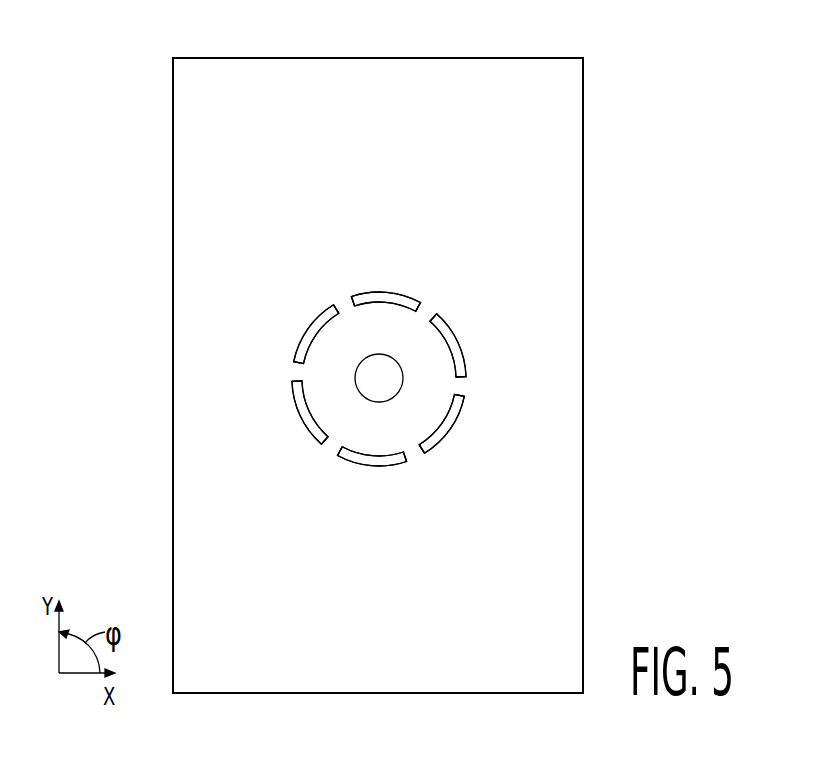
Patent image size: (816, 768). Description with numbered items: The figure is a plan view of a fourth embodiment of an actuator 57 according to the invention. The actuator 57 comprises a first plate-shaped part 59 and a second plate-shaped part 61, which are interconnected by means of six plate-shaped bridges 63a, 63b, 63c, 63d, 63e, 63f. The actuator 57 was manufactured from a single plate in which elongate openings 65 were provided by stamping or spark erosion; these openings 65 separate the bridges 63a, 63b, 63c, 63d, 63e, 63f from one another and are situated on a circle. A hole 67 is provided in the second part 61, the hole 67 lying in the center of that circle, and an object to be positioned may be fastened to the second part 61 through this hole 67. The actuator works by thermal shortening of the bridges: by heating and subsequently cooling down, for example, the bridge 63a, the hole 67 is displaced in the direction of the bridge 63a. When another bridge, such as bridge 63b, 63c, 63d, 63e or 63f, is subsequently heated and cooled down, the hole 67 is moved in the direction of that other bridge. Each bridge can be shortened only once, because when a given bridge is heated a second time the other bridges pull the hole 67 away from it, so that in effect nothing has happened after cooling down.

The actuator 57 is at (181, 38).
The first plate-shaped part 59 is at (565, 577).
The second plate-shaped part 61 is at (442, 363).
The plate-shaped bridge 63a is at (417, 461).
The plate-shaped bridge 63b is at (333, 447).
The plate-shaped bridge 63c is at (294, 370).
The plate-shaped bridge 63d is at (347, 302).
The plate-shaped bridge 63e is at (427, 312).
The plate-shaped bridge 63f is at (460, 385).
The elongate opening 65 is at (383, 291).
The hole 67 is at (392, 387).